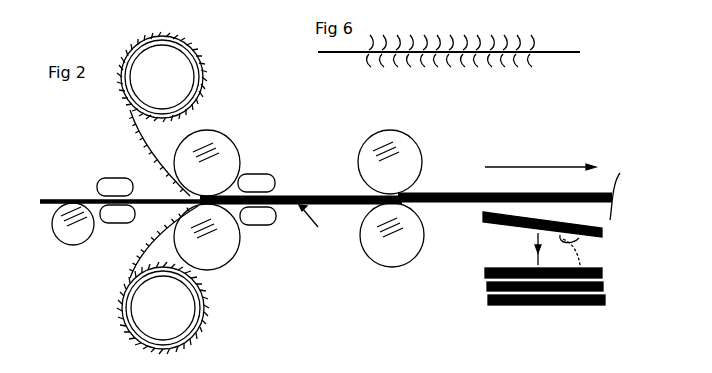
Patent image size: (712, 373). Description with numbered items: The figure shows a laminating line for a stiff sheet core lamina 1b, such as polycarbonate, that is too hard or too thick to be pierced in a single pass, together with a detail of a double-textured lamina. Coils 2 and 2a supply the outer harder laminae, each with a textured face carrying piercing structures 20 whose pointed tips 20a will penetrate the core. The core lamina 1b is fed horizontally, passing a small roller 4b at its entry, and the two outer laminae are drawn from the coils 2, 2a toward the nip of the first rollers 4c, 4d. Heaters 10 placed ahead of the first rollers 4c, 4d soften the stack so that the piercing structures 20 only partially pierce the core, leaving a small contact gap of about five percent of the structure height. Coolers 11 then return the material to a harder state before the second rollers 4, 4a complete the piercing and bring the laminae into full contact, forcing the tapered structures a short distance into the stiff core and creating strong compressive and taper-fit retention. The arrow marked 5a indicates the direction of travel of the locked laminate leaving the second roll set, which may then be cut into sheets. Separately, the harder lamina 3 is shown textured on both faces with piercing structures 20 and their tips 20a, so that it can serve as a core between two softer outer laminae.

In FIG. 2, the stiff sheet core lamina 1b is at (48, 203).
In FIG. 2, the coil 2 is at (162, 77).
In FIG. 2, the coil 2a is at (163, 308).
In FIG. 2, the pointed tips 20a is at (204, 73).
In FIG. 6, the pointed tips 20a is at (410, 48).
In FIG. 6, the piercing structures 20 is at (491, 48).
In FIG. 6, the harder lamina 3 is at (580, 52).
In FIG. 2, the pressure roll 4 is at (390, 162).
In FIG. 2, the pressure roll 4a is at (392, 235).
In FIG. 2, the roll 4b is at (73, 224).
In FIG. 2, the first roller 4c is at (207, 163).
In FIG. 2, the first roller 4d is at (207, 237).
In FIG. 2, the heaters 10 is at (116, 200).
In FIG. 2, the coolers 11 is at (257, 199).
In FIG. 2, the laminate 5a is at (311, 221).